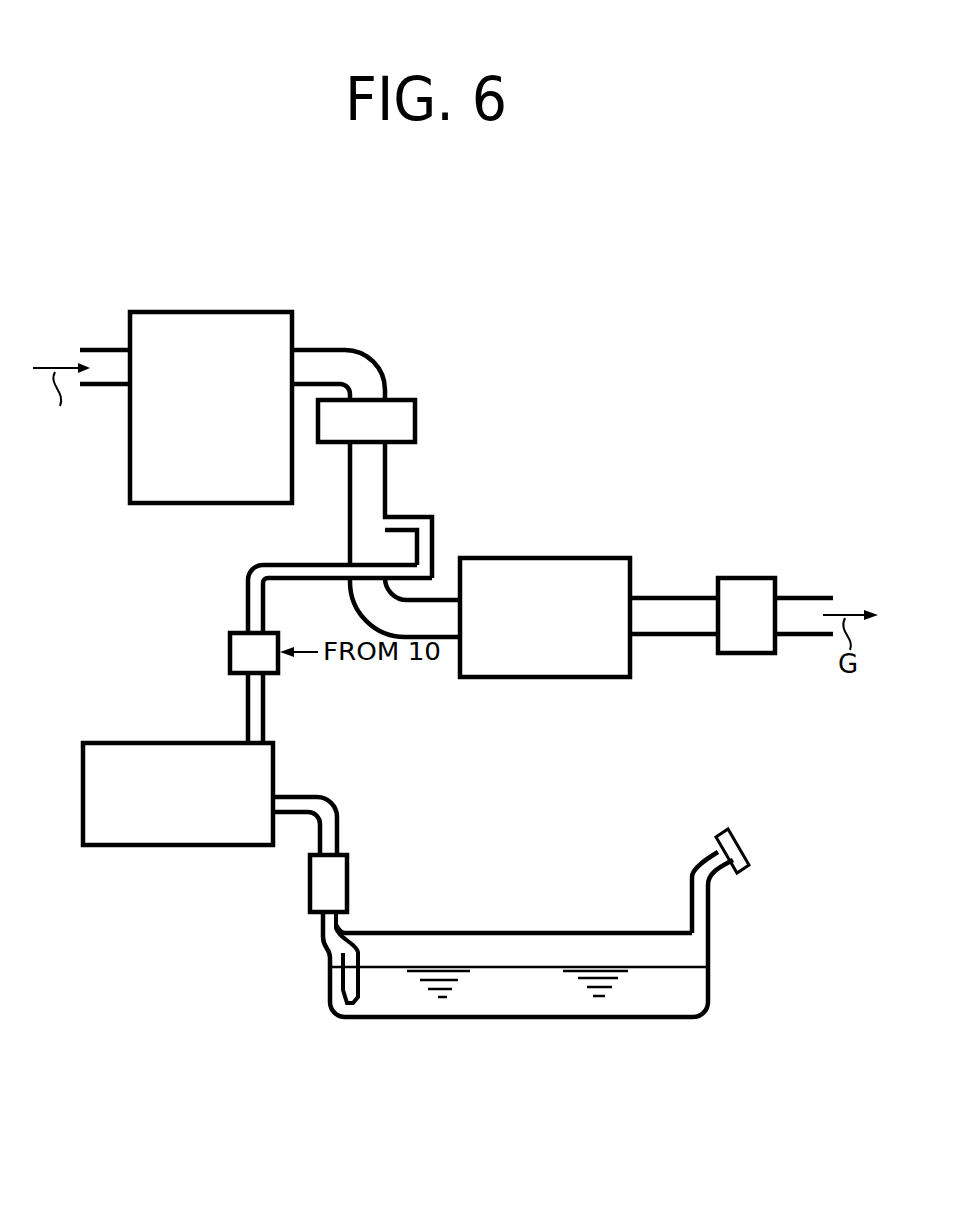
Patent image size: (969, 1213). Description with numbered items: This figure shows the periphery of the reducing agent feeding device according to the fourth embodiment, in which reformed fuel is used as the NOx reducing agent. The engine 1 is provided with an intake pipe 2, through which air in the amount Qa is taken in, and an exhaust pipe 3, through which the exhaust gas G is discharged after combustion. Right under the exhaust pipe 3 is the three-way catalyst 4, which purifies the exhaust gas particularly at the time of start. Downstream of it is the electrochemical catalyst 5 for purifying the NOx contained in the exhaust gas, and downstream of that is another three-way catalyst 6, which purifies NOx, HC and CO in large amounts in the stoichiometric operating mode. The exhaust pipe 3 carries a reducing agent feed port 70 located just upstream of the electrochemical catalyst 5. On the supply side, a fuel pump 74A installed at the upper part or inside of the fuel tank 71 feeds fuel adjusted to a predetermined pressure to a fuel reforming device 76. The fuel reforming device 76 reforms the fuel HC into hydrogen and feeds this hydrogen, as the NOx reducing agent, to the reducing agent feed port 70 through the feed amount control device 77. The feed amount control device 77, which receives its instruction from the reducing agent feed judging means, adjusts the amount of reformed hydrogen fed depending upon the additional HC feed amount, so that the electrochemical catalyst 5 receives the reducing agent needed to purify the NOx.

The engine 1 is at (233, 312).
The intake pipe 2 is at (103, 350).
The exhaust pipe 3 is at (325, 350).
The three-way catalyst 4 is at (400, 400).
The electrochemical catalyst 5 is at (605, 558).
The three-way catalyst 6 is at (757, 578).
The reducing agent feed port 70 is at (380, 514).
The fuel tank 71 is at (612, 940).
The fuel pump 74A is at (308, 880).
The fuel reforming device 76 is at (150, 743).
The feed amount control device 77 is at (228, 652).